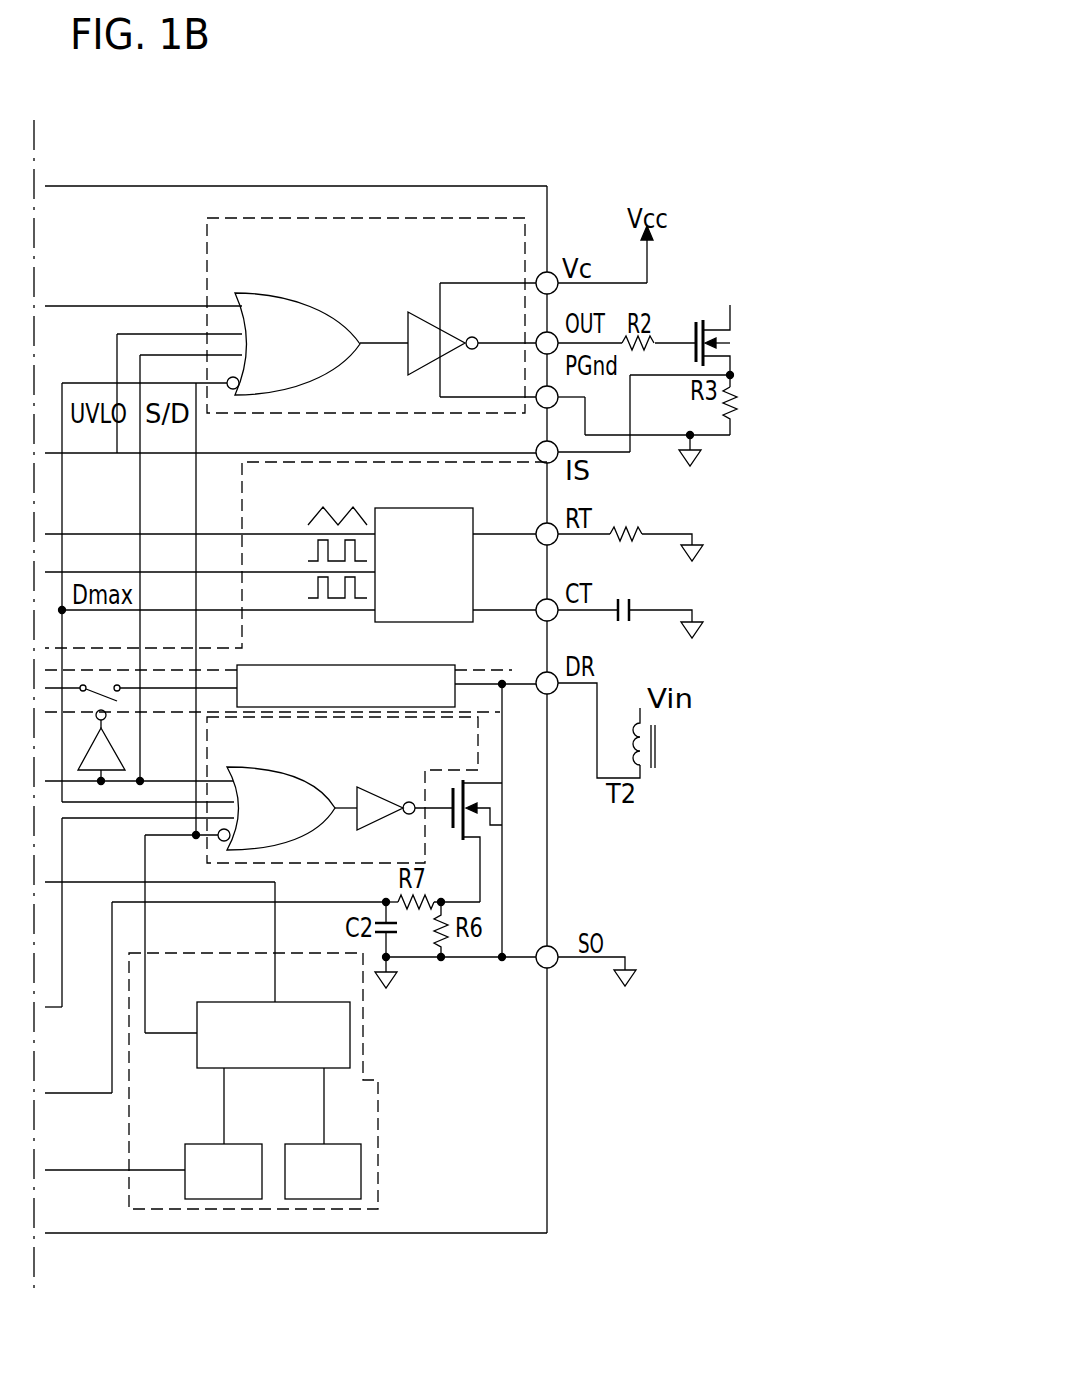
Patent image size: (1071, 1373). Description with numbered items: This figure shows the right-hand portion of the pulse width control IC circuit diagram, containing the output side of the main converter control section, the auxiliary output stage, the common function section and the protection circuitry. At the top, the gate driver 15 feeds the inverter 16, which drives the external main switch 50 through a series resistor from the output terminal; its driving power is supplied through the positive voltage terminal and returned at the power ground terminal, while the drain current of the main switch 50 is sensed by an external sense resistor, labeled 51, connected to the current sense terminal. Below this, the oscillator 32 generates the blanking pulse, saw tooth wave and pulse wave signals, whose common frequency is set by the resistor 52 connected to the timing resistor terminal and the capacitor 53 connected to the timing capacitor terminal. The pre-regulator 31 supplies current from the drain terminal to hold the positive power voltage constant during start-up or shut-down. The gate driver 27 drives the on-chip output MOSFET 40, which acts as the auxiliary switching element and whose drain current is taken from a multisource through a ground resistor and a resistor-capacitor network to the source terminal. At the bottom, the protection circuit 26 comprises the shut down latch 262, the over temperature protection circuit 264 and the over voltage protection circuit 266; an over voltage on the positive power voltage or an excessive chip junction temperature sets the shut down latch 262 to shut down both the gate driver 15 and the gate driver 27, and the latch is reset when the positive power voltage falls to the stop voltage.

The gate driver 15 is at (283, 292).
The inverter 16 is at (406, 338).
The protection circuit 26 is at (492, 1114).
The gate driver 27 is at (342, 789).
The pre-regulator 31 is at (306, 665).
The oscillator 32 is at (383, 511).
The output MOSFET 40 is at (486, 800).
The main switch 50 is at (694, 334).
The resistor R3 51 is at (738, 410).
The resistor 52 is at (628, 524).
The capacitor 53 is at (628, 600).
The shut down latch 262 is at (300, 1002).
The over temperature protection circuit 264 is at (361, 1170).
The over voltage protection circuit 266 is at (222, 1199).